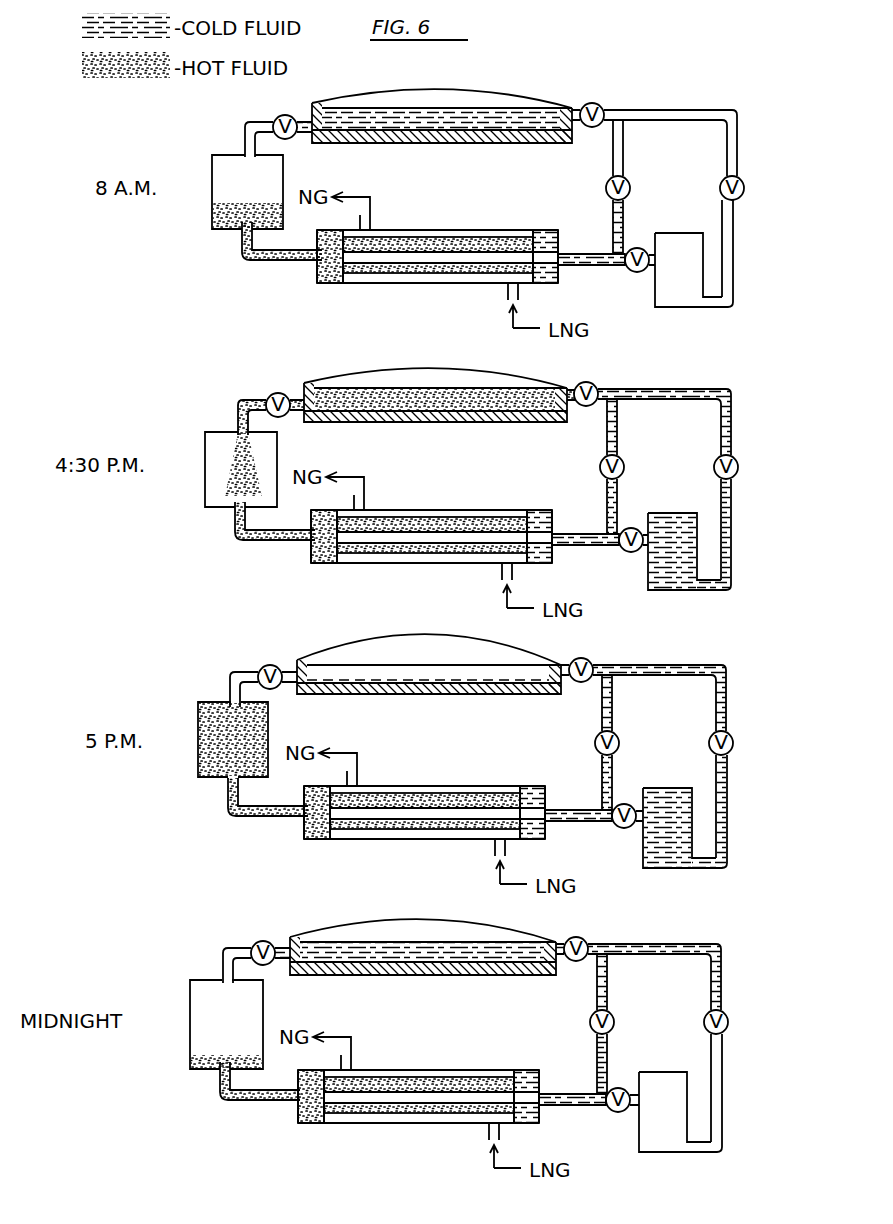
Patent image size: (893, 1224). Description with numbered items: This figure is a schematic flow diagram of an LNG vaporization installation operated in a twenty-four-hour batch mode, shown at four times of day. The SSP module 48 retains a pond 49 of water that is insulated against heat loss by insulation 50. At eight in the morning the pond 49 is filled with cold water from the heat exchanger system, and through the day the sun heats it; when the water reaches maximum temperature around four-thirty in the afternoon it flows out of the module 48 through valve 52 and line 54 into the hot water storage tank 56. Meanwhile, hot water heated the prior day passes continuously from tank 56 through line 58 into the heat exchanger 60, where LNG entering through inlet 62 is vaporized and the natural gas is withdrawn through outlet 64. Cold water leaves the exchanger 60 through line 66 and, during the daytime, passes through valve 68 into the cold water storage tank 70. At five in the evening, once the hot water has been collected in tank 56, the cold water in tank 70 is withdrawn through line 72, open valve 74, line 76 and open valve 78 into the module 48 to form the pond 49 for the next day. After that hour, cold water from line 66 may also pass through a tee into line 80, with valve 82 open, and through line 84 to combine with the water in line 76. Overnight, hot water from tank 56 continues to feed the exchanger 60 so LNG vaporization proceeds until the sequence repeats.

The SSP module 48 is at (435, 518).
The pond 49 is at (437, 511).
The insulation 50 is at (431, 565).
The valve 52 is at (266, 524).
The line 54 is at (222, 544).
The hot water storage tank 56 is at (207, 612).
The line 58 is at (256, 676).
The heat exchanger 60 is at (428, 694).
The inlet 62 is at (510, 732).
The outlet 64 is at (349, 627).
The line 66 is at (582, 699).
The valve 68 is at (620, 701).
The cold water storage tank 70 is at (688, 295).
The line 72 is at (748, 676).
The valve 74 is at (747, 603).
The line 76 is at (662, 545).
The valve 78 is at (597, 515).
The line 80 is at (636, 645).
The valve 82 is at (632, 604).
The line 84 is at (632, 565).